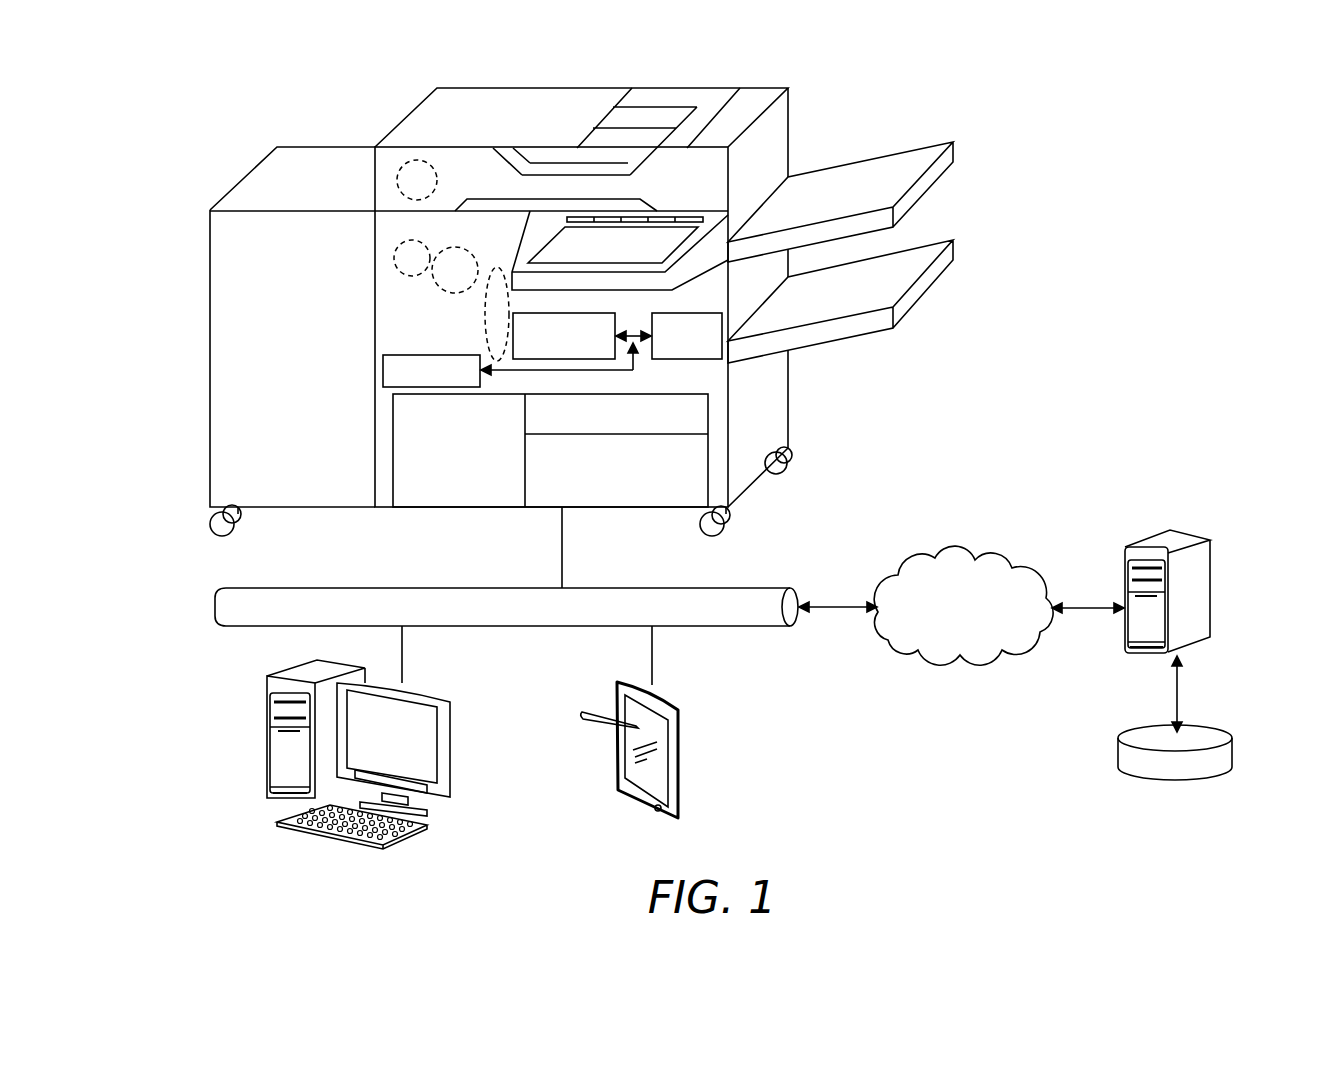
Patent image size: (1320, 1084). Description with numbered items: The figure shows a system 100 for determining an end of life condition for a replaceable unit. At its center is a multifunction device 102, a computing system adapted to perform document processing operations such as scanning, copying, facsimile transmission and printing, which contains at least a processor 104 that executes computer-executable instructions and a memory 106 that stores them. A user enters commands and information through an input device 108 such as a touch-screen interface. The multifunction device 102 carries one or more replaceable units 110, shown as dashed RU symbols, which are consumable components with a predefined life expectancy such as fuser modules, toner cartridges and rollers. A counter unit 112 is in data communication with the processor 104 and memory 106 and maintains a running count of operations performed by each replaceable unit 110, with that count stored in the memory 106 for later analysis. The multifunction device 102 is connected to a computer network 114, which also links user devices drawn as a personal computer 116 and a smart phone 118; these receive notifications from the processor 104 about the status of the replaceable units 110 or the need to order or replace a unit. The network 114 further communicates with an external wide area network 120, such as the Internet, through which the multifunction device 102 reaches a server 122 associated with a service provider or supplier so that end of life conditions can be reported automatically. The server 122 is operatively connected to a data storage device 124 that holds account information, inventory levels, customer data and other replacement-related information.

The system 100 is at (1034, 265).
The multifunction device 102 is at (408, 115).
The processor 104 is at (563, 359).
The memory 106 is at (694, 313).
The input device 108 is at (658, 232).
The replaceable units 110 is at (437, 177).
The counter unit 112 is at (430, 354).
The network 114 is at (732, 587).
The personal computer 116 is at (267, 712).
The smart phone 118 is at (687, 748).
The external wide area network 120 is at (953, 552).
The server 122 is at (1173, 530).
The data storage device 124 is at (1118, 756).